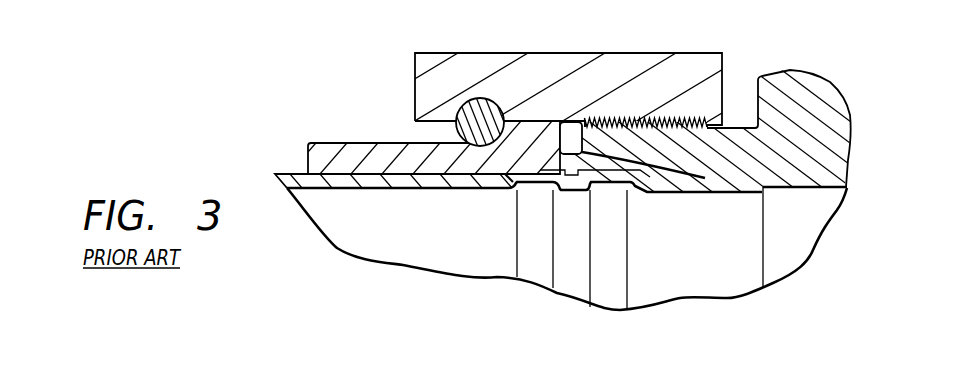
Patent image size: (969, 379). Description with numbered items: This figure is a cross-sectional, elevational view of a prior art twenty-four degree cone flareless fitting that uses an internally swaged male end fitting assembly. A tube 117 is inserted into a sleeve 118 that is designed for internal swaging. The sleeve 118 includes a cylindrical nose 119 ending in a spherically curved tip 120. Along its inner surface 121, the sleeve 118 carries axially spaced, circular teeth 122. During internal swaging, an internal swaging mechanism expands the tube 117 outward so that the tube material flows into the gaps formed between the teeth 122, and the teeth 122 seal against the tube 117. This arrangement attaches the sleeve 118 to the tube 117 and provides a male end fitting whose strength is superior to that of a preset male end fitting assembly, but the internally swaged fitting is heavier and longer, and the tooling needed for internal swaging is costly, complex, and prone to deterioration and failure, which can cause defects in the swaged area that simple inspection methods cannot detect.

The tube 117 is at (323, 235).
The sleeve 118 is at (364, 138).
The cylindrical nose 119 is at (575, 163).
The spherically curved tip 120 is at (650, 190).
The inner surface 121 is at (373, 180).
The circular teeth 122 is at (533, 192).